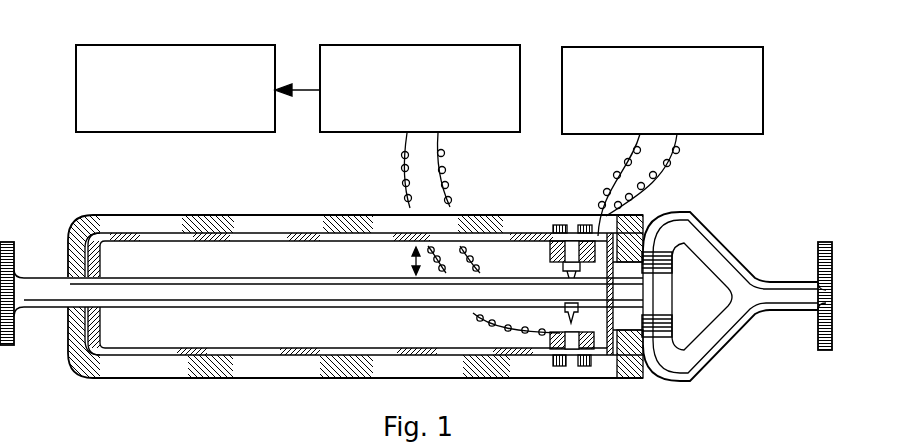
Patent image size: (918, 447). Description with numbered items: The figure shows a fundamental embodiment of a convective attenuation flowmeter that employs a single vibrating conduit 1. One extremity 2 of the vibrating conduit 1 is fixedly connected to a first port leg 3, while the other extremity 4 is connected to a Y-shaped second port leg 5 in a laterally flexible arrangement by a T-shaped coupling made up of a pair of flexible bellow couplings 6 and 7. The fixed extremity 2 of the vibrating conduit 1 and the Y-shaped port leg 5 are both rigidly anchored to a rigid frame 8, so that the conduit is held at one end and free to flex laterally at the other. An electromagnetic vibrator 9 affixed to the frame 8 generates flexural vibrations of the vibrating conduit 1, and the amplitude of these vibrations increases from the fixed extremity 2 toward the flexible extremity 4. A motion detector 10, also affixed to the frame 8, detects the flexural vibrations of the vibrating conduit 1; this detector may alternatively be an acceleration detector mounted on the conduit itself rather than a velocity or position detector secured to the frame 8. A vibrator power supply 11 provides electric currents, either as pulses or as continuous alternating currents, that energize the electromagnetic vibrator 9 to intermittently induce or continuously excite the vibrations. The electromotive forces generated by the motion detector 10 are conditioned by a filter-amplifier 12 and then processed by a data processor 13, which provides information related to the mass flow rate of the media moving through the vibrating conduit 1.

The vibrating conduit 1 is at (330, 308).
The extremity 2 is at (107, 310).
The first port leg 3 is at (43, 308).
The extremity 4 is at (632, 308).
The Y-shaped second port leg 5 is at (792, 310).
The flexible bellow coupling 6 is at (672, 262).
The flexible bellow coupling 7 is at (672, 324).
The rigid frame 8 is at (302, 215).
The electromagnetic vibrator 9 is at (553, 256).
The motion detector 10 is at (603, 354).
The vibrator power supply 11 is at (670, 47).
The filter-amplifier 12 is at (427, 45).
The data processor 13 is at (180, 45).